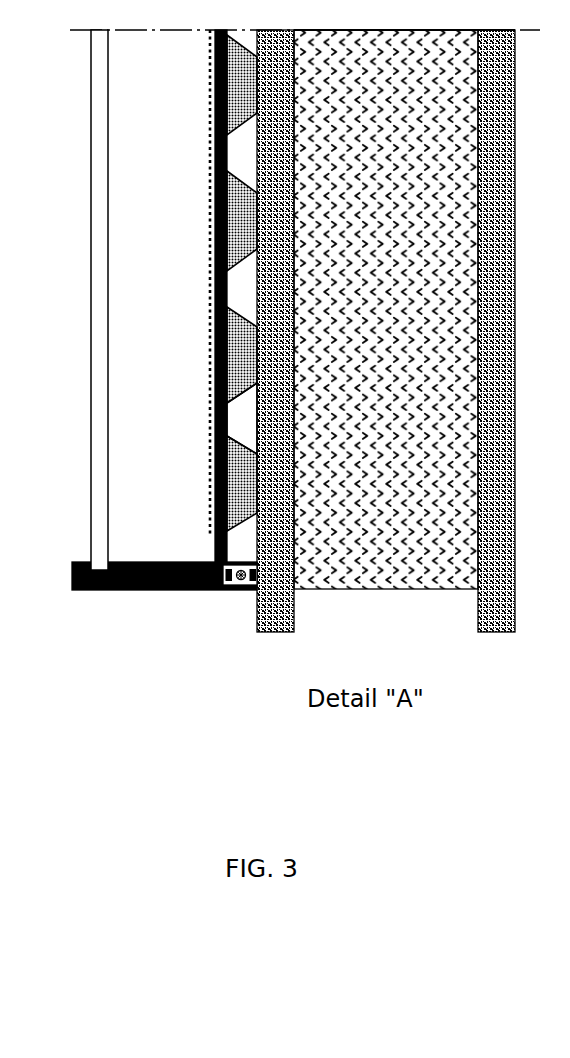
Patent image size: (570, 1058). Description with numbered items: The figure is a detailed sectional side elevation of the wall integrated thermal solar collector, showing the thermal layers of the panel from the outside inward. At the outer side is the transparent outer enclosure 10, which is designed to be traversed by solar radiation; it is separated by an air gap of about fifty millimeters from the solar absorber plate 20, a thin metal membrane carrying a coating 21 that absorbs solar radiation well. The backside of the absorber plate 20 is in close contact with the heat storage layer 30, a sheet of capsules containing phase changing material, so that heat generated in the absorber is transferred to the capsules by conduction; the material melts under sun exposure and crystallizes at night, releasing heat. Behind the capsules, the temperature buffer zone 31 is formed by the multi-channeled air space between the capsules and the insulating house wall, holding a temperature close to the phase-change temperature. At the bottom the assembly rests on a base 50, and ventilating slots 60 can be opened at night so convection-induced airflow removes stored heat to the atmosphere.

The transparent outer enclosure 10 is at (98, 100).
The solar absorber plate 20 is at (213, 182).
The coating 21 is at (213, 237).
The heat storage layer 30 is at (242, 370).
The temperature buffer zone 31 is at (242, 427).
The base 50 is at (142, 588).
The ventilating slots 60 is at (217, 562).